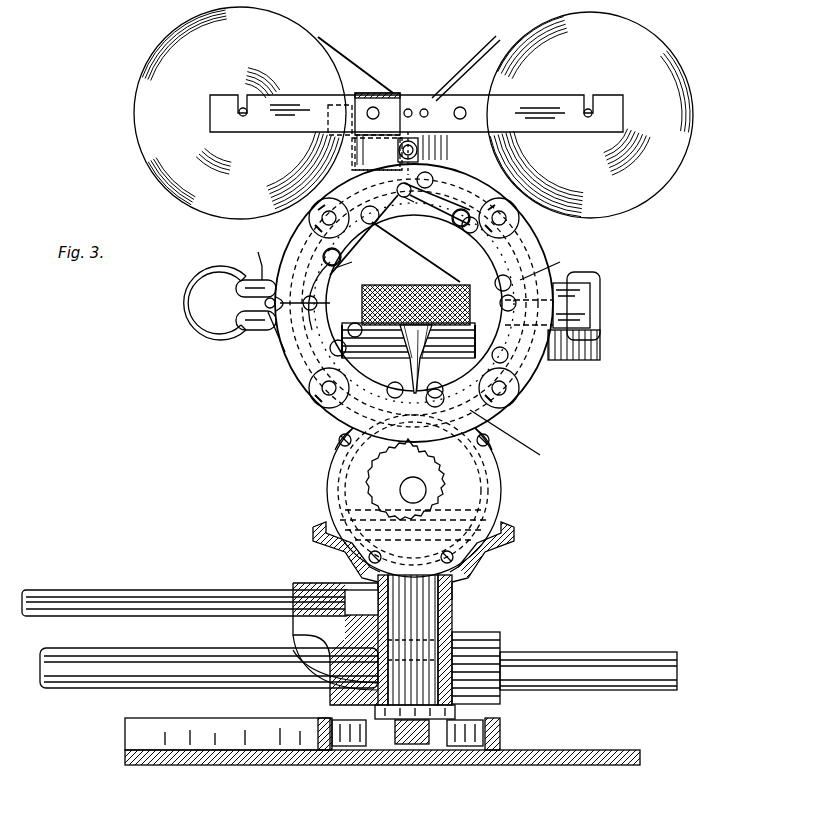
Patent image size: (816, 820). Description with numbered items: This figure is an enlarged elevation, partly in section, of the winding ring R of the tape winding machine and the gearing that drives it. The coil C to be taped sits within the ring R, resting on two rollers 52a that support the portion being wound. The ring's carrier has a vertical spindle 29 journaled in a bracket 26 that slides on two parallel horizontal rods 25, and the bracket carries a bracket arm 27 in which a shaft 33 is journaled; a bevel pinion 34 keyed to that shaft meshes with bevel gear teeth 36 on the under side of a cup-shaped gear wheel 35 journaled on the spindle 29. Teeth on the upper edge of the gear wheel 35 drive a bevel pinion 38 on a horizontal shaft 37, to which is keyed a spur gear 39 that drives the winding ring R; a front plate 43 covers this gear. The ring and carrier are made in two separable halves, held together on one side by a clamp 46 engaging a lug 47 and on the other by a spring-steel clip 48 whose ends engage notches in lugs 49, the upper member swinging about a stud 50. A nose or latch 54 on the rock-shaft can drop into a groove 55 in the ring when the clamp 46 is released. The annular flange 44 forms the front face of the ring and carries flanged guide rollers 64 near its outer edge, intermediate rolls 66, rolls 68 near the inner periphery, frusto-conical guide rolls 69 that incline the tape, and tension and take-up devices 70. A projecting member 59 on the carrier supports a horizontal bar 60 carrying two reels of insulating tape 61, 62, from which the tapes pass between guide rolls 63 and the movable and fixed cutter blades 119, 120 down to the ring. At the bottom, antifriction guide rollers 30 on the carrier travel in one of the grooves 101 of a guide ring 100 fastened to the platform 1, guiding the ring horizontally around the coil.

The platform 1 is at (230, 762).
The horizontal rods 25 is at (60, 680).
The bracket 26 is at (470, 632).
The bracket arm 27 is at (292, 690).
The vertical spindle 29 is at (428, 605).
The antifriction guide rollers 30 is at (408, 742).
The shaft 33 is at (122, 590).
The bevel pinion 34 is at (315, 580).
The cup-shaped gear wheel 35 is at (340, 546).
The bevel gear teeth 36 is at (470, 575).
The horizontal shaft 37 is at (400, 490).
The bevel pinion 38 is at (488, 490).
The spur gear 39 is at (480, 507).
The front plate 43 is at (495, 452).
The annular flange 44 is at (520, 330).
The clamp 46 is at (600, 280).
The lug 47 is at (600, 325).
The clamping ring or clip 48 is at (182, 303).
The lug or nose 49 is at (268, 328).
The stud or pin 50 is at (280, 350).
The rollers 52a is at (478, 330).
The nose or latch 54 is at (410, 362).
The groove 55 is at (463, 232).
The projecting member 59 is at (468, 135).
The horizontal bar 60 is at (308, 105).
The reel of insulating tape 61 is at (590, 115).
The reel of insulating tape 62 is at (240, 113).
The guide rolls 63 is at (408, 109).
The flanged guide rollers 64 is at (312, 222).
The rolls 66 is at (326, 225).
The rolls 68 is at (342, 259).
The frusto-conical guide rolls 69 is at (378, 222).
The tension and take-up devices 70 is at (428, 238).
The guide ring 100 is at (175, 728).
The grooves 101 is at (460, 745).
The movable blade 119 is at (377, 154).
The fixed blade 120 is at (425, 145).
The coil C is at (416, 293).
The winding ring R is at (552, 264).